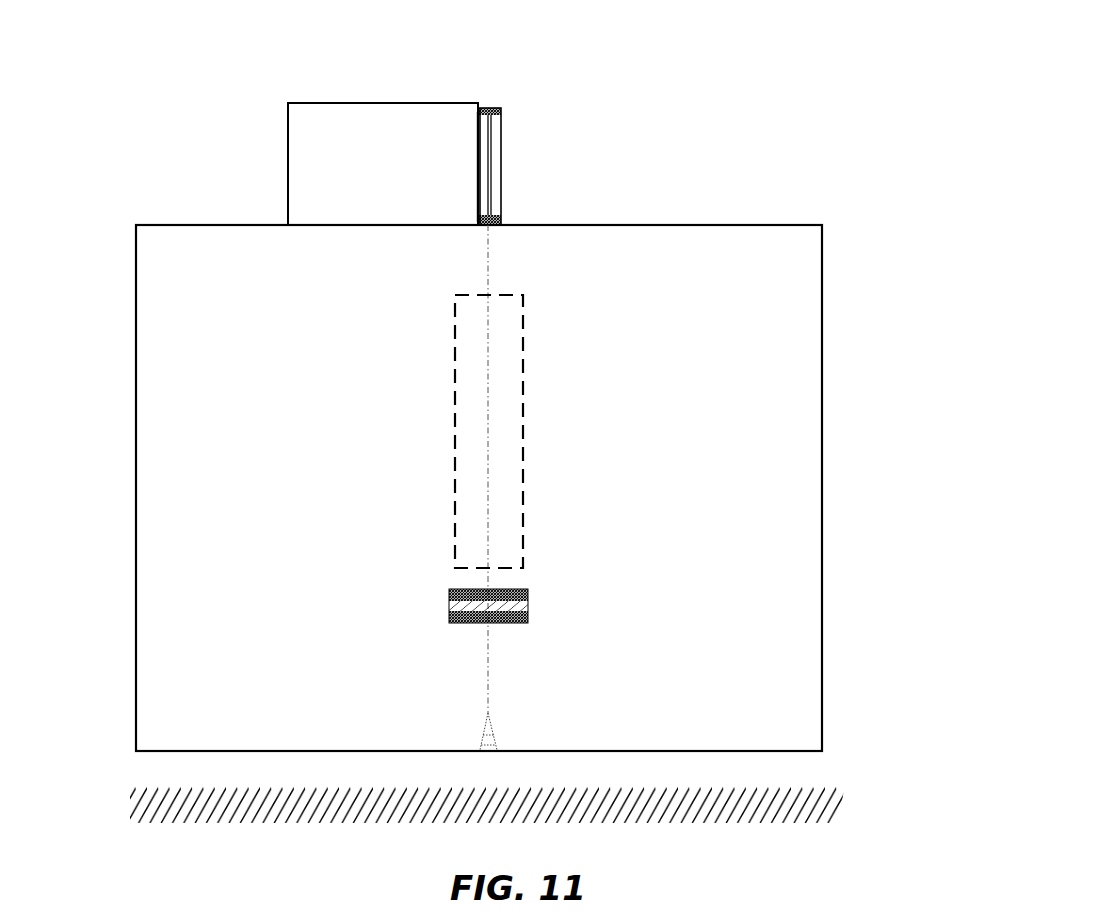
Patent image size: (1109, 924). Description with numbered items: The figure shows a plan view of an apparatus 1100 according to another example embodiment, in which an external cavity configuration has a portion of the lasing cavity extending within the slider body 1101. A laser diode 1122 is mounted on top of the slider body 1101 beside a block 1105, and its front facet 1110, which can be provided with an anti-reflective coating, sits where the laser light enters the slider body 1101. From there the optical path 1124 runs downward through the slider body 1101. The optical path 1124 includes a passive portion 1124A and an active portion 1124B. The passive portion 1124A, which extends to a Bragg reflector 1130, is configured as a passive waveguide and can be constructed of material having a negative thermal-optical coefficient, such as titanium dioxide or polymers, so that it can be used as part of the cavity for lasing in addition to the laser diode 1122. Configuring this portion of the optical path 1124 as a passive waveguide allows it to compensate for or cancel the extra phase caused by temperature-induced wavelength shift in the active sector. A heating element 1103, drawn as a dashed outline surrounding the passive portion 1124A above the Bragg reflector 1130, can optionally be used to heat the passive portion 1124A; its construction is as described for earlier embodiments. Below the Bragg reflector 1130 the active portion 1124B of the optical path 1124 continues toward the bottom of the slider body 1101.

The apparatus 1100 is at (662, 88).
The slider body 1101 is at (136, 347).
The heating element 1103 is at (455, 421).
The module 1105 is at (288, 142).
The front facet 1110 is at (498, 217).
The laser diode 1122 is at (474, 145).
The optical path 1124 is at (499, 662).
The passive portion of the optical path 1124A is at (491, 276).
The active portion of the optical path 1124B is at (491, 707).
The Bragg reflector 1130 is at (455, 590).